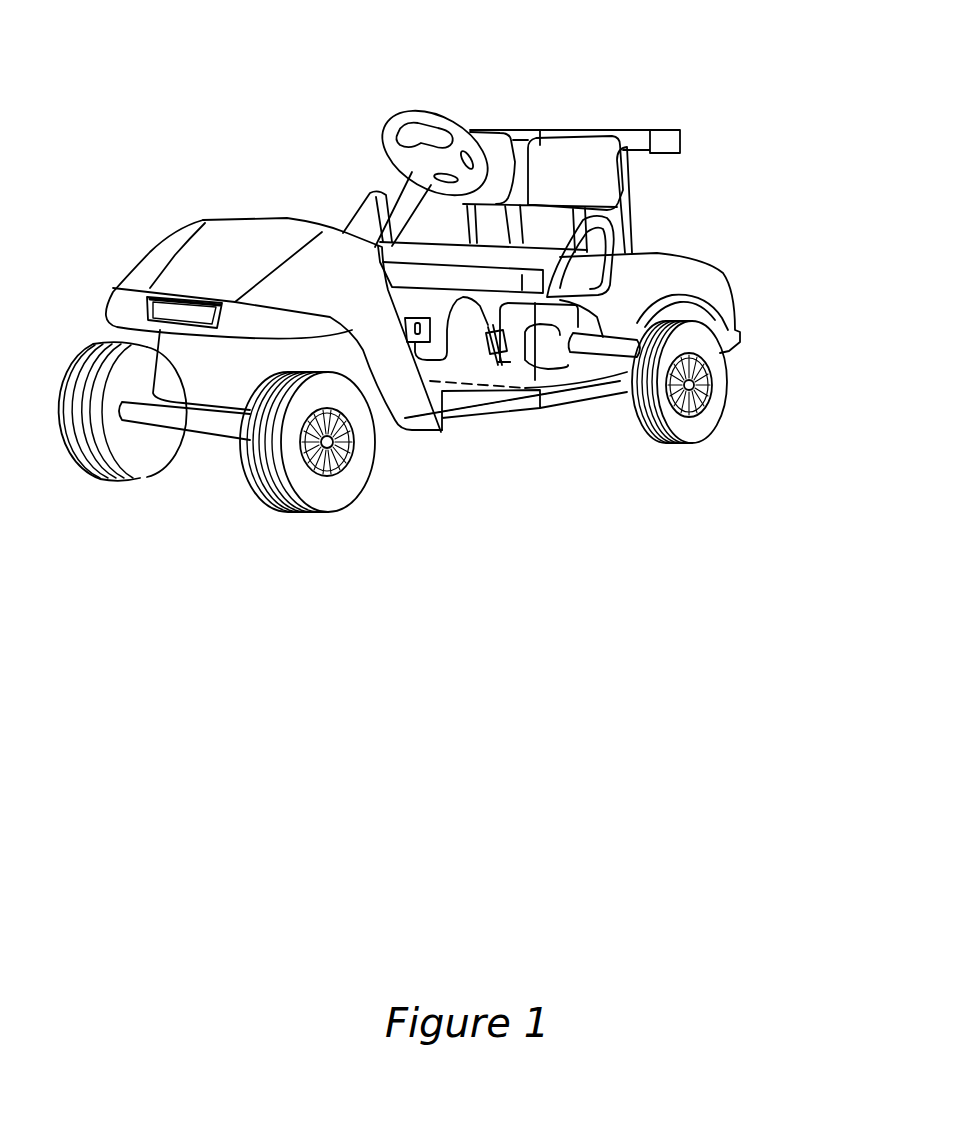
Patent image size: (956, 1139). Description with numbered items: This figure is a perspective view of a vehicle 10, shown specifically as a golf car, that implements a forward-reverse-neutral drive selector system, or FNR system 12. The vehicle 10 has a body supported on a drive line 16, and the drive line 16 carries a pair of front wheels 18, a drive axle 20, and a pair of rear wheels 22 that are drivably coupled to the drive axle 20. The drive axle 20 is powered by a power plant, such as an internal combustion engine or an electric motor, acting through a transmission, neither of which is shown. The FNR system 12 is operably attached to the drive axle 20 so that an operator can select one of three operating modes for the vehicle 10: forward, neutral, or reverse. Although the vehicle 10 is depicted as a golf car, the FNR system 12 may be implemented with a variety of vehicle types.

The vehicle 10 is at (423, 266).
The forward-reverse-neutral drive selector system 12 is at (433, 362).
The drive line 16 is at (542, 436).
The front wheels 18 is at (253, 497).
The drive axle 20 is at (603, 357).
The rear wheels 22 is at (717, 394).